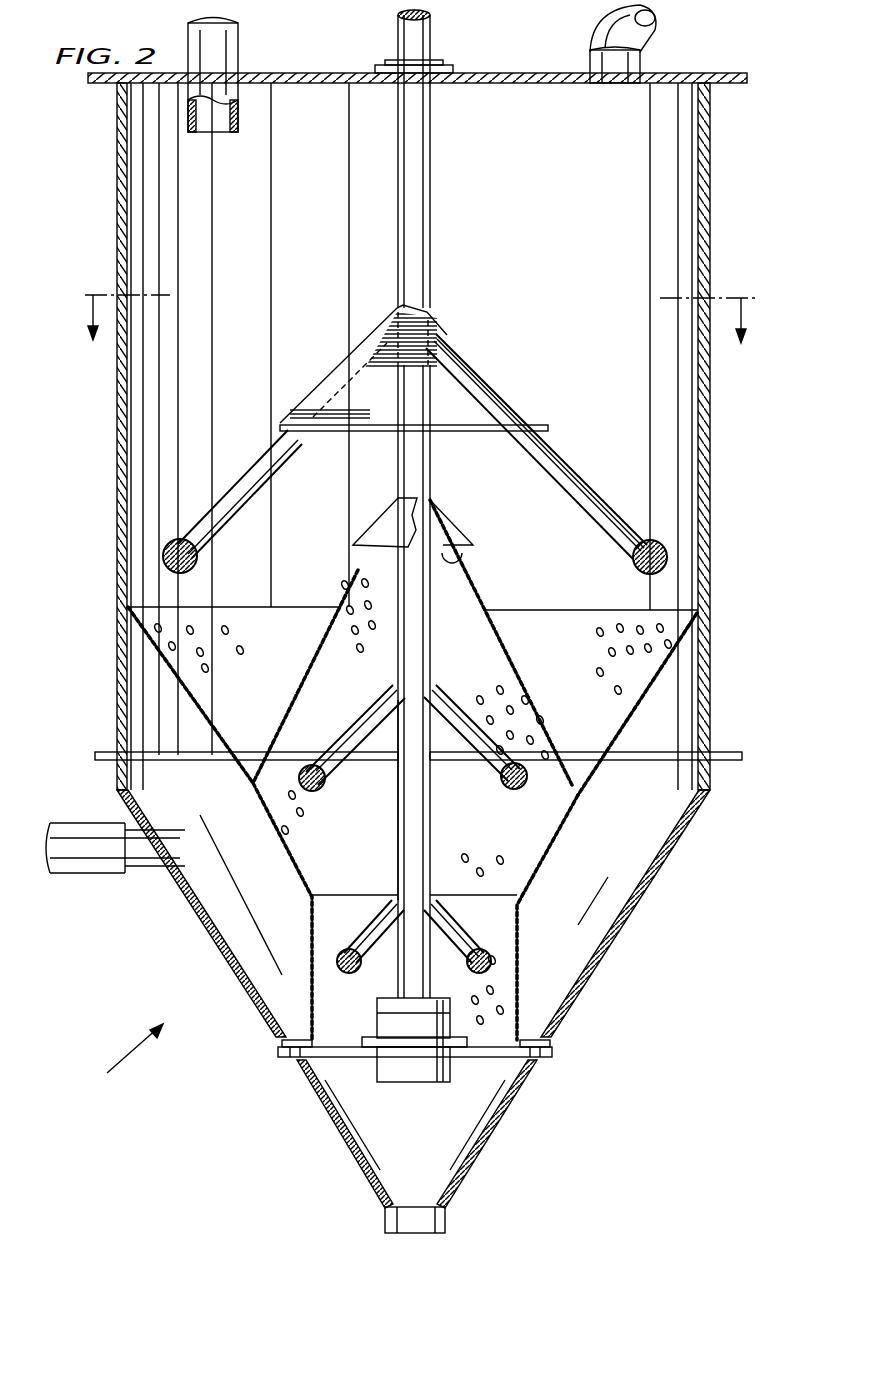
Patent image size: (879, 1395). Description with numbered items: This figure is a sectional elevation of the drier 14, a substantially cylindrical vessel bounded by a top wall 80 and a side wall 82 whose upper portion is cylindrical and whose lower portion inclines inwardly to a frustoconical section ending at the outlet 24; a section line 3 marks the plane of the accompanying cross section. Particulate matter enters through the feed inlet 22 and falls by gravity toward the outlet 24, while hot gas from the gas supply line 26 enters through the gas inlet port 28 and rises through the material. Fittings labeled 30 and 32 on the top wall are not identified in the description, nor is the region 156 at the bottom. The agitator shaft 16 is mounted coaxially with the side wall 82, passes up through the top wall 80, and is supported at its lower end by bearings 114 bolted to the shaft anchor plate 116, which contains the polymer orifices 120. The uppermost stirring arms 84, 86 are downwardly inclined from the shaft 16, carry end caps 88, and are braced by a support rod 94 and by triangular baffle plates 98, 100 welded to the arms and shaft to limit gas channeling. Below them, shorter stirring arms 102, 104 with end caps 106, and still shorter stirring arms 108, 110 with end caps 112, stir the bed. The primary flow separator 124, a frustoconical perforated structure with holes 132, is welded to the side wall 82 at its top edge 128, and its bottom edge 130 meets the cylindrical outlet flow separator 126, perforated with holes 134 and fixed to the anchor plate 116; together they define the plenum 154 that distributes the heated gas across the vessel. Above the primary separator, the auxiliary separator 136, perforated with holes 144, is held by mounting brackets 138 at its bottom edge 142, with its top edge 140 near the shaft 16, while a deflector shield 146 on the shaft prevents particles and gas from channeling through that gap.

The section line 3- 3 is at (420, 301).
The drier 14 is at (121, 1058).
The agitator shaft 16 is at (432, 26).
The feed inlet 22 is at (230, 132).
The outlet 24 is at (447, 1222).
The gas supply line 26 is at (85, 875).
The gas inlet port 28 is at (180, 878).
The gas outlet pipe 30 is at (622, 83).
The outlet elbow 32 is at (590, 42).
The top wall 80 is at (330, 73).
The side wall 82 is at (118, 432).
The stirring arm 84 is at (262, 432).
The stirring arm 86 is at (563, 453).
The end caps 88 is at (165, 556).
The support rod 94 is at (470, 433).
The baffle plate 98 is at (503, 383).
The baffle plate 100 is at (370, 330).
The stirring arm 102 is at (380, 700).
The stirring arm 104 is at (442, 700).
The end cap 106 is at (320, 790).
The stirring arm 108 is at (365, 923).
The stirring arm 110 is at (455, 925).
The lower spray pipe caps 112 is at (340, 967).
The bearings 114 is at (377, 1023).
The shaft anchor plate 116 is at (360, 1050).
The polymer orifices 120 is at (300, 1062).
The primary flow separator 124 is at (133, 655).
The outlet flow separator 126 is at (522, 975).
The top edge 128 is at (127, 607).
The bottom edge 130 is at (345, 895).
The holes 132 is at (232, 625).
The holes 134 is at (305, 935).
The auxiliary separator 136 is at (498, 610).
The mounting brackets 138 is at (175, 755).
The top edge 140 is at (445, 513).
The bottom edge 142 is at (440, 760).
The holes 144 is at (350, 603).
The deflector shield 146 is at (460, 567).
The plenum 154 is at (636, 866).
The lower cone zone 156 is at (447, 1151).